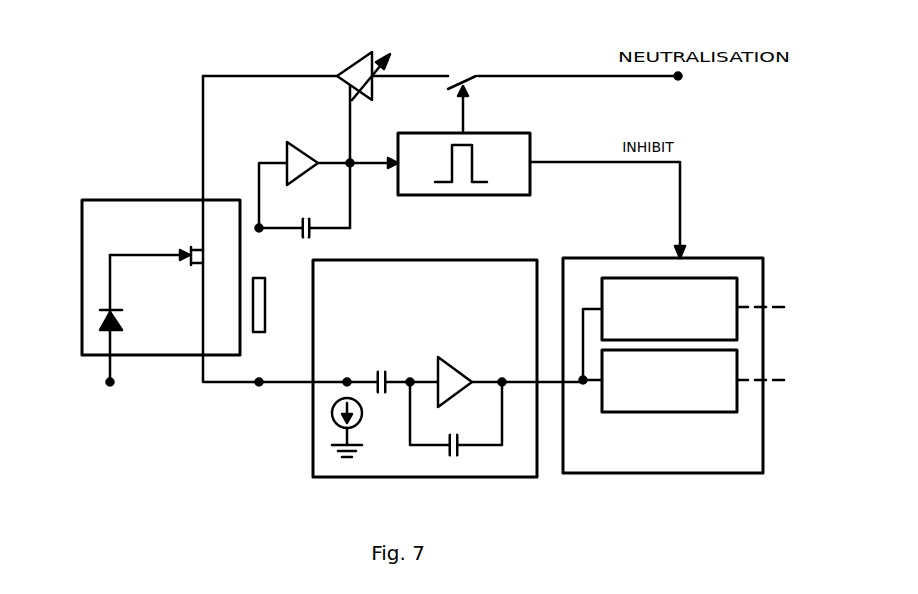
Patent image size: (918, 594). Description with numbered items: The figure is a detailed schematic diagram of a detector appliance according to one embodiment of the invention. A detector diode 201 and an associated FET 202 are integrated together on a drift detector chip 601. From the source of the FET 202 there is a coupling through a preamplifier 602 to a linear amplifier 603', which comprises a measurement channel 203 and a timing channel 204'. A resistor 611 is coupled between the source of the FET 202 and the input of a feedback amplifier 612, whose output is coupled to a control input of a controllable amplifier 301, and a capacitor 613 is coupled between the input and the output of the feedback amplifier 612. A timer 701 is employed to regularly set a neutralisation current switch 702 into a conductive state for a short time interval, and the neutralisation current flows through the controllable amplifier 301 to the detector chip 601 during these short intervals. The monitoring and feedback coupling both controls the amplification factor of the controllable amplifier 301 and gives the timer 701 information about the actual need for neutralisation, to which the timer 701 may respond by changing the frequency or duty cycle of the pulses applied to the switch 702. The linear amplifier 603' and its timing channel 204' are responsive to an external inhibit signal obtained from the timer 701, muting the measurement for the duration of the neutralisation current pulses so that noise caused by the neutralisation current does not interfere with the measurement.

The detector diode 201 is at (100, 314).
The FET 202 is at (196, 268).
The measurement channel 203 is at (700, 412).
The timing channel 204' is at (669, 276).
The controllable amplifier 301 is at (346, 63).
The drift detector chip 601 is at (118, 199).
The preamplifier 602 is at (330, 477).
The linear amplifier 603' is at (670, 401).
The resistor 611 is at (266, 296).
The feedback amplifier 612 is at (303, 150).
The capacitor 613 is at (305, 223).
The timer 701 is at (500, 133).
The neutralisation current switch 702 is at (450, 86).